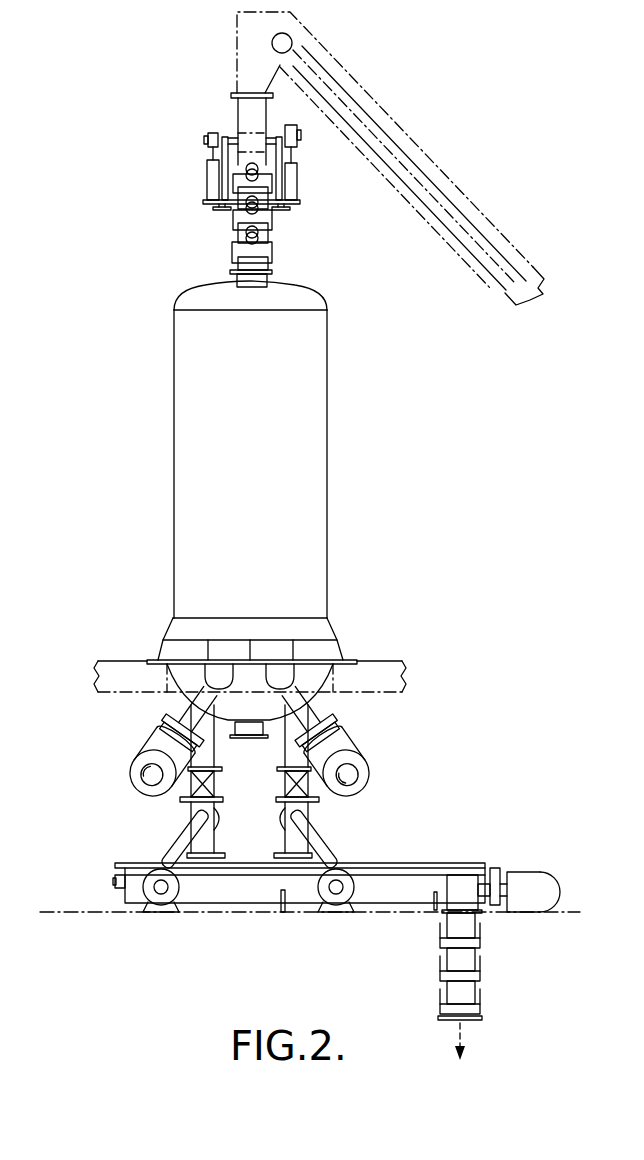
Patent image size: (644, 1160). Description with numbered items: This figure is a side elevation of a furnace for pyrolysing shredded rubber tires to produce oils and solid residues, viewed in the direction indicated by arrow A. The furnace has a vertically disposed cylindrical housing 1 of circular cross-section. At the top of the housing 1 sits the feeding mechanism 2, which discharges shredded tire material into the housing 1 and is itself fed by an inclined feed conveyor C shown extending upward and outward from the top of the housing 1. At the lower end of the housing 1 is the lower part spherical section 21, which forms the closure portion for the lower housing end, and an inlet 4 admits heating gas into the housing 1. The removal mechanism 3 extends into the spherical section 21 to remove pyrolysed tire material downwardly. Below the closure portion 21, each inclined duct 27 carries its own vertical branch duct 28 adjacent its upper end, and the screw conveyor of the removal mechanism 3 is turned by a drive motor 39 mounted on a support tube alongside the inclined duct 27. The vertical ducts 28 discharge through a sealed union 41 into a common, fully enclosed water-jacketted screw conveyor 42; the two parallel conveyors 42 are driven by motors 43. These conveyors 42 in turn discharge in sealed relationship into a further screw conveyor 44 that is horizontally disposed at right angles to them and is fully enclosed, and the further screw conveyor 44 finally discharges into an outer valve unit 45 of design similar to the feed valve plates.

The cylindrical housing 1 is at (287, 421).
The feeding mechanism 2 is at (303, 161).
The removal mechanism 3 is at (345, 805).
The inlet 4 is at (238, 738).
The lower part spherical section 21 is at (305, 677).
The inclined duct 27 is at (195, 703).
The vertical branch duct 28 is at (190, 728).
The drive motor 39 is at (153, 750).
The sealed union 41 is at (288, 779).
The water jacketted screw conveyor 42 is at (185, 815).
The motor 43 is at (161, 890).
The further screw conveyor 44 is at (415, 876).
The outer valve unit 45 is at (490, 968).
The viewing direction arrow A is at (96, 584).
The inclined feed conveyor C is at (457, 220).